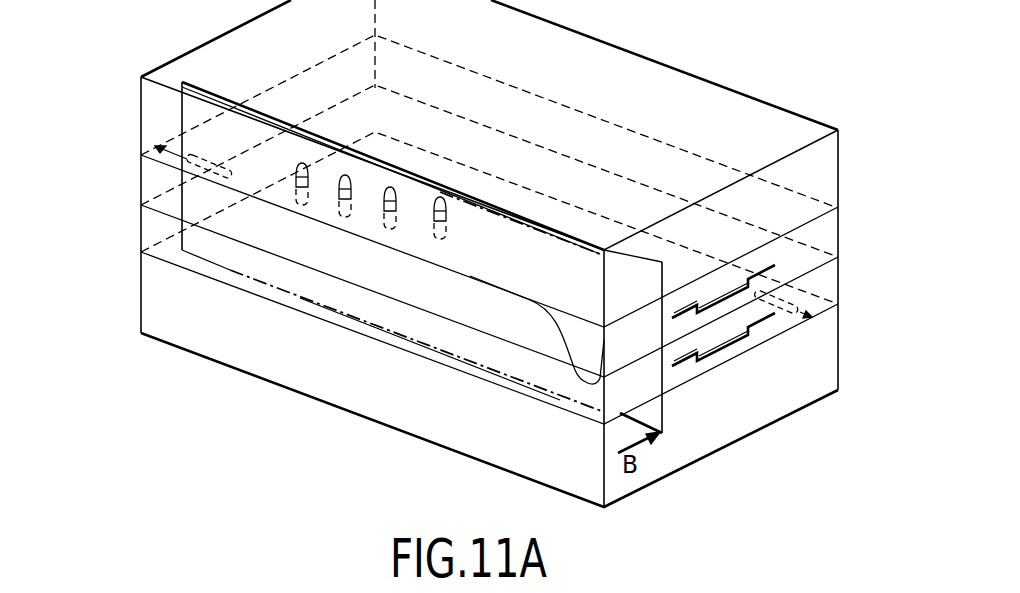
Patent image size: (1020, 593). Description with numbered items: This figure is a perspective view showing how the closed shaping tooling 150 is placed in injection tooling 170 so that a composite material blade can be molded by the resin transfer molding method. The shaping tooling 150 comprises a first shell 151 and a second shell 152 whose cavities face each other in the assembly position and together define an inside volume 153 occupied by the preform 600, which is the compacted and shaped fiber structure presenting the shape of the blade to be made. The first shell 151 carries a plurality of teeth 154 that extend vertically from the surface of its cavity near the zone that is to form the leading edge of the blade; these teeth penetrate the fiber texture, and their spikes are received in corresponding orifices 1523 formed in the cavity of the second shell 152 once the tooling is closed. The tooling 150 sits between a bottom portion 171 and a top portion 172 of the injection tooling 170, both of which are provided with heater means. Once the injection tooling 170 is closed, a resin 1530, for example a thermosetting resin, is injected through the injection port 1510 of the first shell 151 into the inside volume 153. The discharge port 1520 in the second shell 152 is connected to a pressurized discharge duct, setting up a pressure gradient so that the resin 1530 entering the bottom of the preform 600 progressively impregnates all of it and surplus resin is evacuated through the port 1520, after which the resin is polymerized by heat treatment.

The preform 600 is at (581, 192).
The injection tooling 170 is at (430, 265).
The top portion 172 is at (152, 107).
The bottom portion 171 is at (462, 334).
The discharge port 1520 is at (210, 165).
The orifices 1523 is at (303, 165).
The teeth 154 is at (440, 197).
The shaping tooling 150 is at (421, 383).
The second shell 152 is at (325, 262).
The first shell 151 is at (410, 340).
The inside volume 153 is at (492, 313).
The injection port 1510 is at (778, 308).
The resin 1530 is at (823, 312).